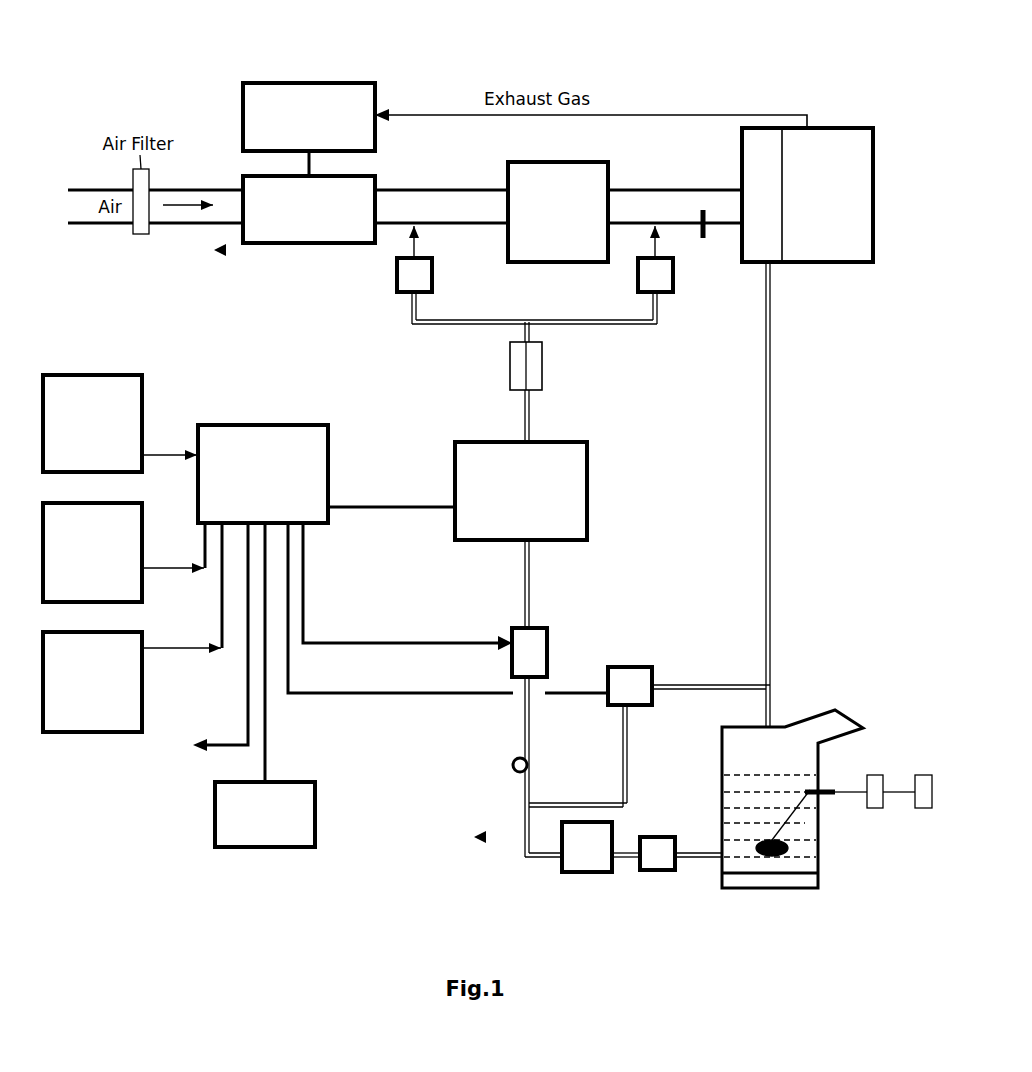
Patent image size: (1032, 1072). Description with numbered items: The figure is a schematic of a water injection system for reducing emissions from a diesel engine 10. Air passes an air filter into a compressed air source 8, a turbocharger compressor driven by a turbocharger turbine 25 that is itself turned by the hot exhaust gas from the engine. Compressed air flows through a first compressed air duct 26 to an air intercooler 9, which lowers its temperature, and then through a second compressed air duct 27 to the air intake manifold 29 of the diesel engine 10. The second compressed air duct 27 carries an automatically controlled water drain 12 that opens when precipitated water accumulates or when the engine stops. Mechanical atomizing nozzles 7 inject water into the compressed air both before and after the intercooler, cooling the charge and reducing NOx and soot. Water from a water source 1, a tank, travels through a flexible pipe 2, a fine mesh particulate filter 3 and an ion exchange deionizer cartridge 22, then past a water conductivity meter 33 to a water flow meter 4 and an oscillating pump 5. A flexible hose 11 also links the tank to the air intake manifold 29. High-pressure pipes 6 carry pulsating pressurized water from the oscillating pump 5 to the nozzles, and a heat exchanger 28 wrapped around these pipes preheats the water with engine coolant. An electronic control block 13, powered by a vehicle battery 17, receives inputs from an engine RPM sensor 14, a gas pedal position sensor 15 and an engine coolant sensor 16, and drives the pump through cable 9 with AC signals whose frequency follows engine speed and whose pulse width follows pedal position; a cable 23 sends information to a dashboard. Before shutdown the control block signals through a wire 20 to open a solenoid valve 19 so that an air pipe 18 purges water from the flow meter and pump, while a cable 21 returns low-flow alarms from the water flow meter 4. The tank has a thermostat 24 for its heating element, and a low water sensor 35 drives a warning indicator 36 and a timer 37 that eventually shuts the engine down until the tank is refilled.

The water source 1 is at (788, 757).
The flexible pipe 2 is at (705, 857).
The fine mesh particulate filter 3 is at (655, 871).
The water flow meter 4 is at (507, 628).
The oscillating pump 5 is at (521, 491).
The high-pressure pipes 6 is at (530, 420).
The mechanical atomizing nozzles 7 is at (433, 278).
The compressed air source 8 is at (309, 209).
The air intercooler 9 is at (375, 485).
The diesel engine 10 is at (807, 195).
The flexible hose 11 is at (765, 390).
The water drain 12 is at (703, 238).
The electronic control block 13 is at (263, 474).
The engine RPM sensor 14 is at (120, 423).
The gas pedal position sensor 15 is at (123, 552).
The engine coolant sensor 16 is at (132, 682).
The vehicle battery 17 is at (265, 814).
The air pipe 18 is at (715, 683).
The solenoid valve 19 is at (627, 665).
The wire 20 is at (430, 697).
The cable 21 is at (430, 638).
The ion exchange deionizer cartridge 22 is at (577, 873).
The cable 23 is at (207, 645).
The thermostat 24 is at (787, 900).
The turbocharger turbine 25 is at (309, 117).
The first compressed air duct 26 is at (495, 197).
The second compressed air duct 27 is at (670, 197).
The heat exchanger 28 is at (503, 377).
The air intake manifold 29 is at (769, 195).
The water conductivity meter 33 is at (515, 777).
The low water sensor 35 is at (805, 795).
The warning indicator 36 is at (885, 810).
The timer 37 is at (917, 772).